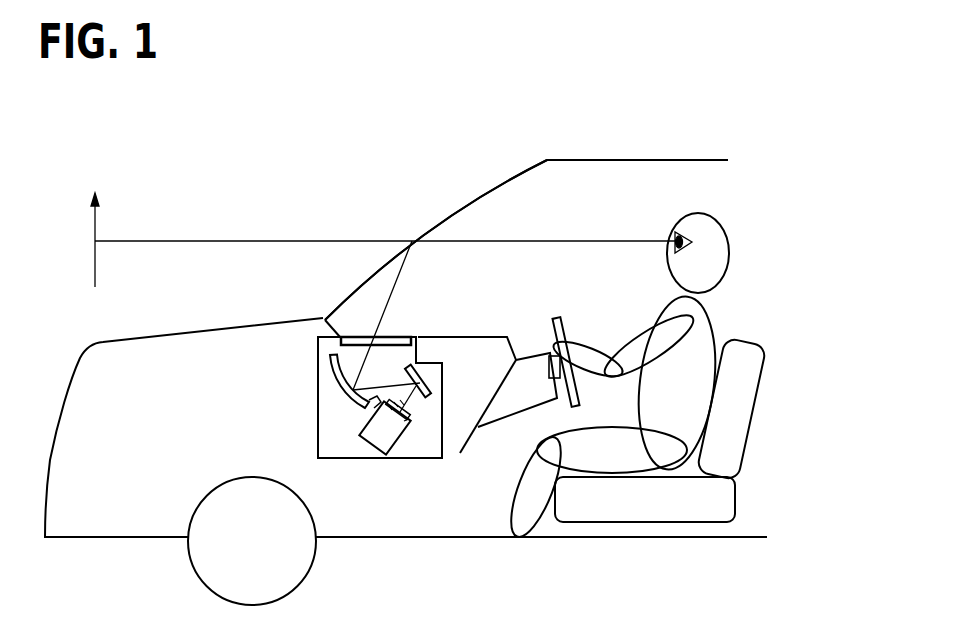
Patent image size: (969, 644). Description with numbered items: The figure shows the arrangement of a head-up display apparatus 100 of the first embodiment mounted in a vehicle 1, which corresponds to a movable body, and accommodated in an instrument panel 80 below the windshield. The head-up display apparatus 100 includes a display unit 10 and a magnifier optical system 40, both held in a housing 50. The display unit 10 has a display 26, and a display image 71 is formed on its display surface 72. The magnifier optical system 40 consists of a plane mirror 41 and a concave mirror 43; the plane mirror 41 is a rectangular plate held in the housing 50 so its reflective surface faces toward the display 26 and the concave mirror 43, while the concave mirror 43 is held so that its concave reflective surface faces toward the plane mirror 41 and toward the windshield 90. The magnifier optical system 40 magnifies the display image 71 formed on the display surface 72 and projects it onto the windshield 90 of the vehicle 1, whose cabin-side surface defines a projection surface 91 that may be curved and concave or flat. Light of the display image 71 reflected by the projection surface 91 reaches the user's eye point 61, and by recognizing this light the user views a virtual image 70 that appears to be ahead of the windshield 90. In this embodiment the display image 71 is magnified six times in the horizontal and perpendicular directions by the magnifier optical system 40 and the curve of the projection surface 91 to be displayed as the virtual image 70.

The vehicle 1 is at (700, 160).
The display unit 10 is at (365, 443).
The display 26 is at (367, 410).
The magnifier optical system 40 is at (462, 311).
The plane mirror 41 is at (413, 366).
The concave mirror 43 is at (340, 362).
The housing 50 is at (436, 462).
The eye point 61 is at (675, 233).
The virtual image 70 is at (97, 198).
The display image 71 is at (402, 409).
The display surface 72 is at (410, 426).
The instrument panel 80 is at (476, 337).
The windshield 90 is at (473, 199).
The projection surface 91 is at (421, 236).
The head-up display apparatus 100 is at (417, 459).